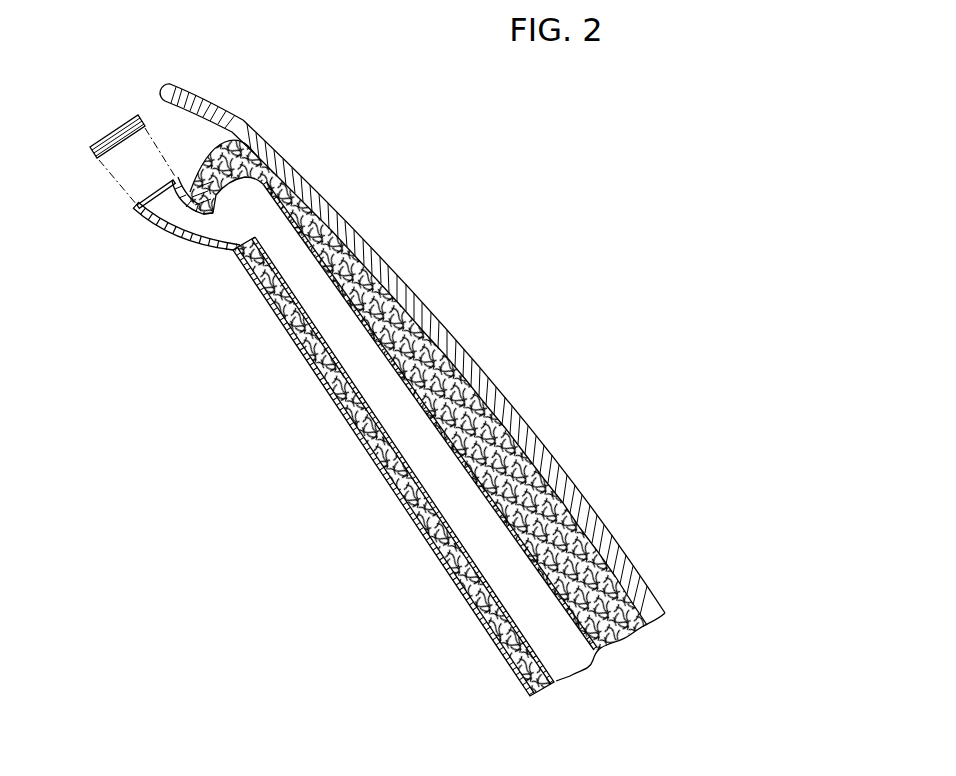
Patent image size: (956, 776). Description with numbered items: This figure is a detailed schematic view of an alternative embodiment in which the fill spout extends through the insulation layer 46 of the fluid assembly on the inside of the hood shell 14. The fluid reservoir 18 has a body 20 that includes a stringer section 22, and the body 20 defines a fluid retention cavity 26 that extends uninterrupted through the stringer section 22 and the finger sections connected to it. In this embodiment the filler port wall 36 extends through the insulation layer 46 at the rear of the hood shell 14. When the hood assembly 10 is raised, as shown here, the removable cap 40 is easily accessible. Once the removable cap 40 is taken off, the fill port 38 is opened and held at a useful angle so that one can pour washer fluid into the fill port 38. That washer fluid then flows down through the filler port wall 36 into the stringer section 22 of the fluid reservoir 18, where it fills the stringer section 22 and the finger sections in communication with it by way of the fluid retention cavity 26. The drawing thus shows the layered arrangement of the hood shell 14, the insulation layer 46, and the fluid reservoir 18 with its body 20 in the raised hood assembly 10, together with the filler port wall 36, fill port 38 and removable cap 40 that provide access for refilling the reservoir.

The hood assembly 10 is at (480, 245).
The hood shell 14 is at (483, 368).
The fluid reservoir 18 is at (425, 580).
The body 20 is at (515, 450).
The stringer section 22 is at (508, 568).
The fluid retention cavity 26 is at (407, 440).
The filler port wall 36 is at (147, 208).
The fill port 38 is at (162, 210).
The removable cap 40 is at (113, 130).
The insulation layer 46 is at (295, 363).